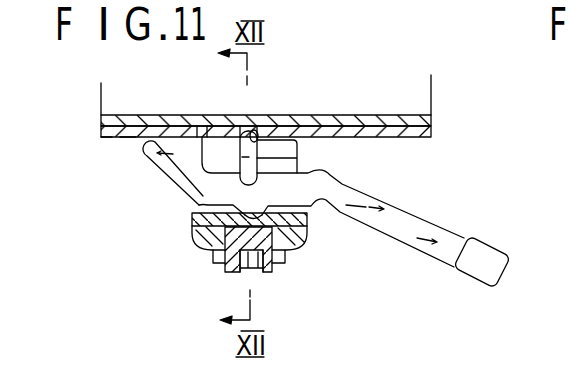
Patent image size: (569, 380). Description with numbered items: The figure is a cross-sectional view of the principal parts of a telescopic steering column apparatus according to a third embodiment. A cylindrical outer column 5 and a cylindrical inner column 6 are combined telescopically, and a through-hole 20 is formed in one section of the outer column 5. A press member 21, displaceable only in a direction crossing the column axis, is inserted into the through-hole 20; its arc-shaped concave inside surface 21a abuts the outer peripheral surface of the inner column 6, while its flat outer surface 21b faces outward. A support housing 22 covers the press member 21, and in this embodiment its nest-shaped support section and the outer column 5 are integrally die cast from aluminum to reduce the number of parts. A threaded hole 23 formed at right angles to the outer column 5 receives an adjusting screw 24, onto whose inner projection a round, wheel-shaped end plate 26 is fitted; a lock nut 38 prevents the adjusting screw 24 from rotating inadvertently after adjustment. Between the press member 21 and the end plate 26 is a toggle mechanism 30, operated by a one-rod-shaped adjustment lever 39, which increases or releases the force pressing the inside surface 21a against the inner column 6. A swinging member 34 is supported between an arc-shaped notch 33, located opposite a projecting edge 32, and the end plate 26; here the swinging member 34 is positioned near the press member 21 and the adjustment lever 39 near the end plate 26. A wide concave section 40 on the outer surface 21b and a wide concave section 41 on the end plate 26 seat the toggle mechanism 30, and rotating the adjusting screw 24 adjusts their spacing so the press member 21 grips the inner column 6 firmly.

The outer column 5 is at (127, 138).
The inner column 6 is at (110, 140).
The through-hole 20 is at (215, 116).
The press member 21 is at (303, 115).
The inside surface 21a is at (260, 115).
The outer surface 21b is at (200, 152).
The support housing 22 is at (308, 240).
The threaded hole 23 is at (270, 273).
The adjusting screw 24 is at (230, 273).
The end plate 26 is at (240, 167).
The toggle mechanism 30 is at (350, 180).
The projecting edge 32 is at (302, 222).
The arc-shaped notch 33 is at (203, 202).
The swinging member 34 is at (297, 158).
The lock nut 38 is at (290, 250).
The adjustment lever 39 is at (390, 211).
The concave section 40 is at (280, 115).
The concave section 41 is at (196, 228).